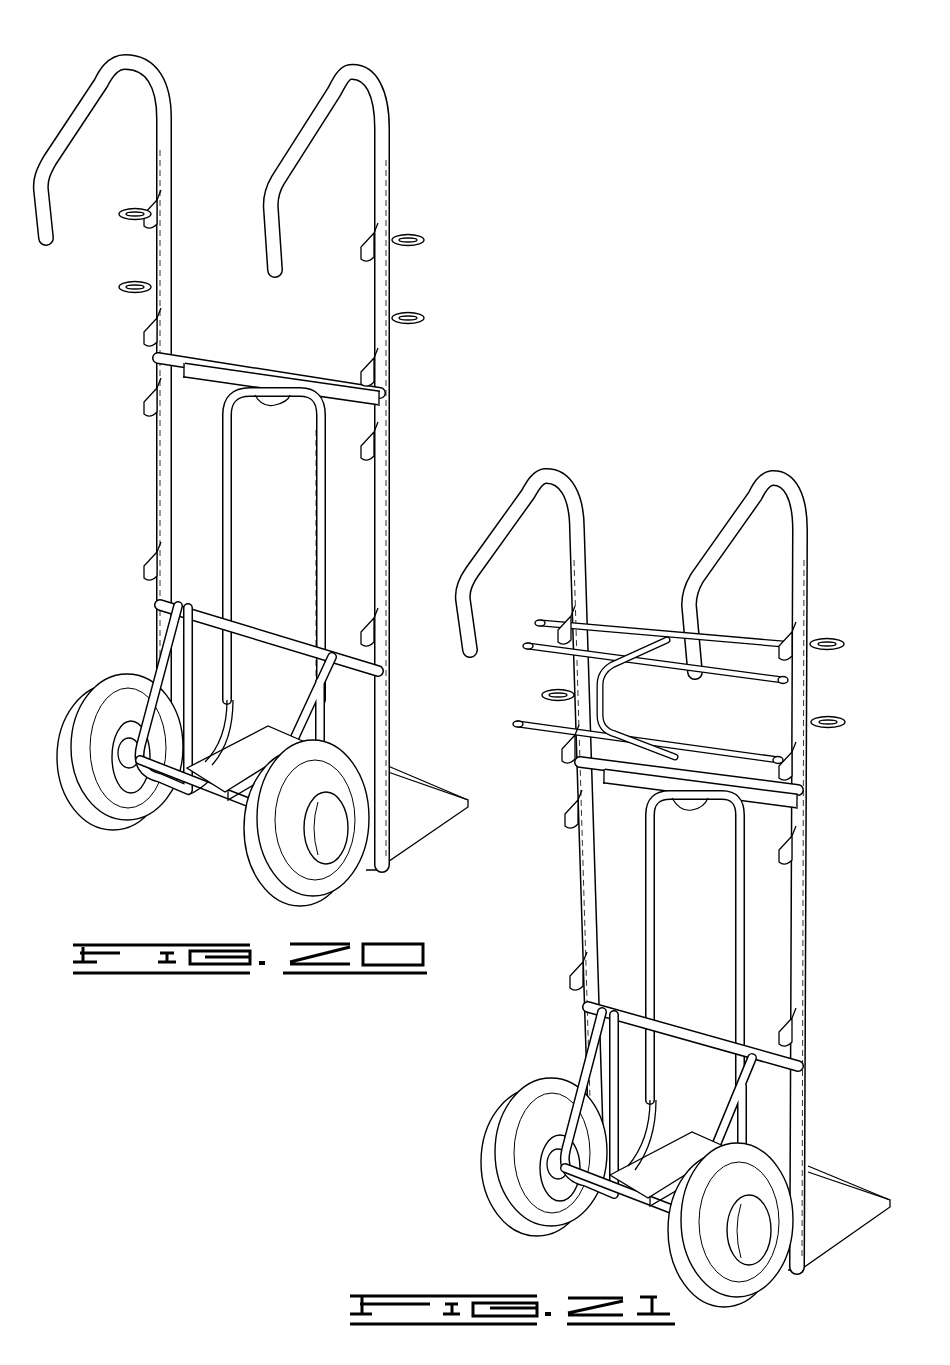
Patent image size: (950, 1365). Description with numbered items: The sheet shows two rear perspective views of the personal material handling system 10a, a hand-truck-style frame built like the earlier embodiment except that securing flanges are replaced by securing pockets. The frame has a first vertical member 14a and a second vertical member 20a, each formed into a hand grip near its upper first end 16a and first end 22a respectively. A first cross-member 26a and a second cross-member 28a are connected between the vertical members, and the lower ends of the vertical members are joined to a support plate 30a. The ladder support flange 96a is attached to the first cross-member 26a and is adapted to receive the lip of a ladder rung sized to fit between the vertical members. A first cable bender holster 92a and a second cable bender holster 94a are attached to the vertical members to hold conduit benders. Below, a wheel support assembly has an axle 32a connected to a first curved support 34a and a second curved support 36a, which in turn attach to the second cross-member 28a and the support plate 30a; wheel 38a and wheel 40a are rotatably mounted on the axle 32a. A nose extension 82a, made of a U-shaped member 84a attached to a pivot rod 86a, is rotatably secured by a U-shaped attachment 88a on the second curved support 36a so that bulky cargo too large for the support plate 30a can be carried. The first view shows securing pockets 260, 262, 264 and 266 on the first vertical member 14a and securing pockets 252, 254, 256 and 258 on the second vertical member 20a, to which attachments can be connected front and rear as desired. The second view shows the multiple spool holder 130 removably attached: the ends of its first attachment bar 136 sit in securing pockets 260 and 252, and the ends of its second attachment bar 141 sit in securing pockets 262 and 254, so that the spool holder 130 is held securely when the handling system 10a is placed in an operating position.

In FIG. 20, the personal material handling system 10a is at (240, 57).
In FIG. 21, the personal material handling system 10a is at (680, 456).
In FIG. 20, the first vertical member 14a is at (172, 147).
In FIG. 21, the first vertical member 14a is at (590, 520).
In FIG. 20, the second vertical member 20a is at (392, 140).
In FIG. 21, the second vertical member 20a is at (810, 546).
In FIG. 20, the first end of second vertical member 22a is at (56, 248).
In FIG. 20, the first end of first vertical member 16a is at (276, 280).
In FIG. 20, the securing pocket 260 is at (150, 210).
In FIG. 21, the securing pocket 260 is at (568, 622).
In FIG. 20, the securing pocket 262 is at (145, 333).
In FIG. 21, the securing pocket 262 is at (570, 752).
In FIG. 20, the securing pocket 264 is at (146, 402).
In FIG. 21, the securing pocket 264 is at (570, 815).
In FIG. 20, the securing pocket 266 is at (148, 565).
In FIG. 21, the securing pocket 266 is at (574, 968).
In FIG. 20, the securing pocket 252 is at (386, 238).
In FIG. 21, the securing pocket 252 is at (808, 640).
In FIG. 20, the securing pocket 254 is at (392, 372).
In FIG. 21, the securing pocket 254 is at (810, 766).
In FIG. 20, the securing pocket 256 is at (392, 440).
In FIG. 21, the securing pocket 256 is at (810, 846).
In FIG. 20, the securing pocket 258 is at (388, 630).
In FIG. 21, the securing pocket 258 is at (810, 1022).
In FIG. 20, the first cable bender holster 92a is at (422, 238).
In FIG. 20, the second cable bender holster 94a is at (130, 220).
In FIG. 20, the ladder support flange 96a is at (190, 356).
In FIG. 20, the first cross-member 26a is at (330, 374).
In FIG. 20, the nose extension 82a is at (222, 430).
In FIG. 20, the U-shaped member 84a is at (313, 486).
In FIG. 20, the second cross-member 28a is at (265, 628).
In FIG. 20, the second curved support 36a is at (175, 665).
In FIG. 20, the first curved support 34a is at (318, 678).
In FIG. 20, the pivot rod 86a is at (265, 710).
In FIG. 20, the support plate 30a is at (467, 795).
In FIG. 21, the support plate 30a is at (839, 1218).
In FIG. 20, the wheel 40a is at (102, 815).
In FIG. 20, the wheel 38a is at (268, 888).
In FIG. 20, the U-shaped attachment 88a is at (200, 798).
In FIG. 20, the axle 32a is at (228, 832).
In FIG. 21, the multiple spool holder 130 is at (631, 584).
In FIG. 21, the first attachment bar 136 is at (722, 632).
In FIG. 21, the second attachment bar 141 is at (802, 798).